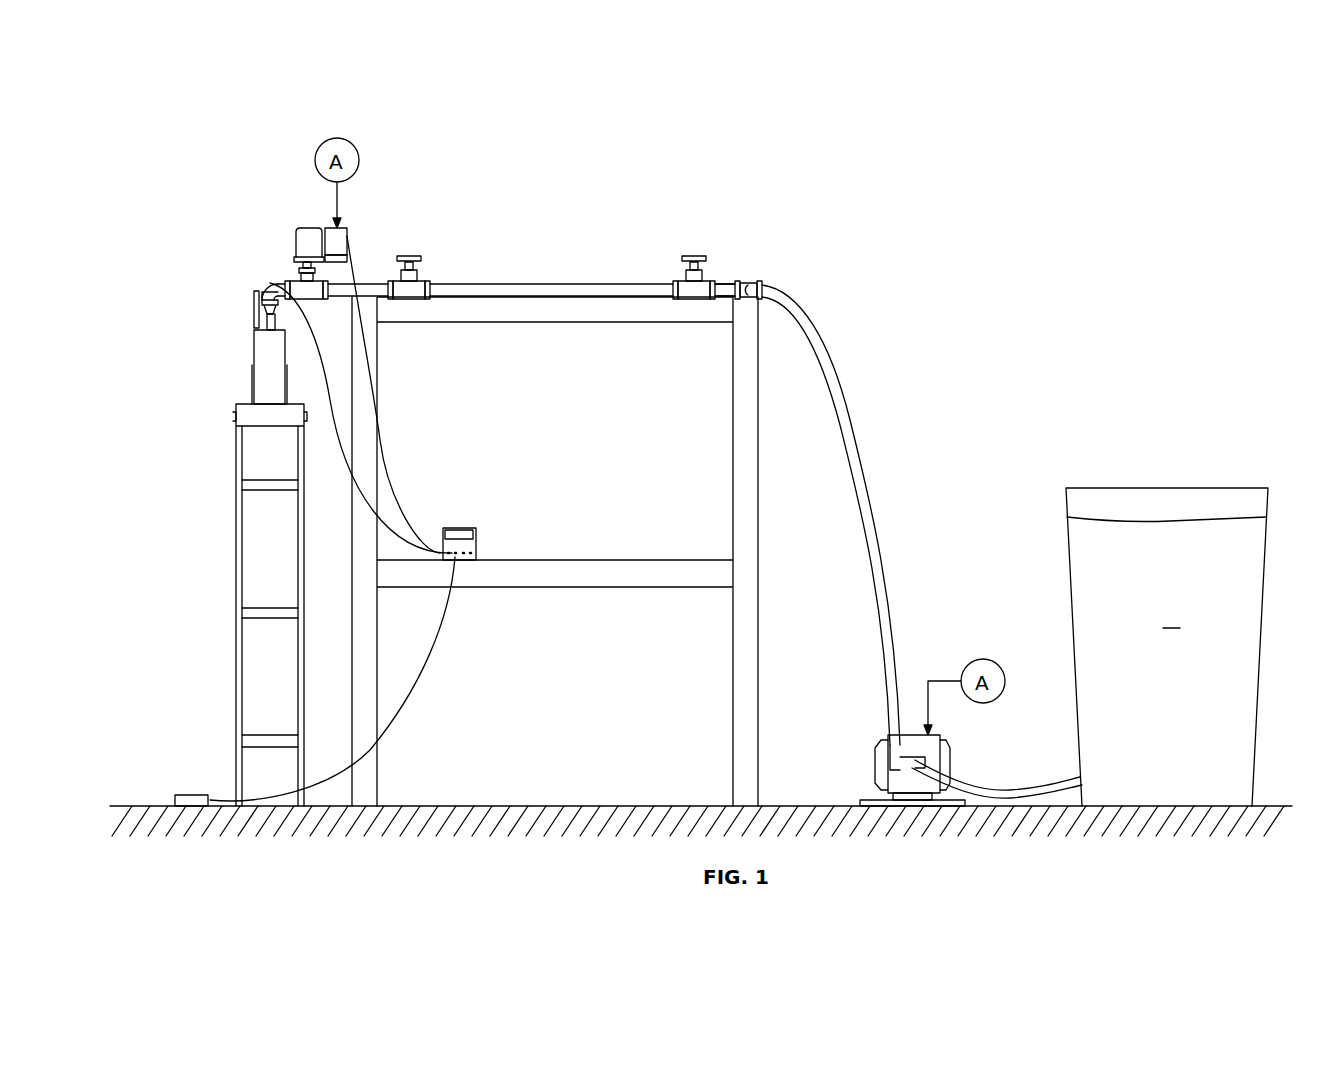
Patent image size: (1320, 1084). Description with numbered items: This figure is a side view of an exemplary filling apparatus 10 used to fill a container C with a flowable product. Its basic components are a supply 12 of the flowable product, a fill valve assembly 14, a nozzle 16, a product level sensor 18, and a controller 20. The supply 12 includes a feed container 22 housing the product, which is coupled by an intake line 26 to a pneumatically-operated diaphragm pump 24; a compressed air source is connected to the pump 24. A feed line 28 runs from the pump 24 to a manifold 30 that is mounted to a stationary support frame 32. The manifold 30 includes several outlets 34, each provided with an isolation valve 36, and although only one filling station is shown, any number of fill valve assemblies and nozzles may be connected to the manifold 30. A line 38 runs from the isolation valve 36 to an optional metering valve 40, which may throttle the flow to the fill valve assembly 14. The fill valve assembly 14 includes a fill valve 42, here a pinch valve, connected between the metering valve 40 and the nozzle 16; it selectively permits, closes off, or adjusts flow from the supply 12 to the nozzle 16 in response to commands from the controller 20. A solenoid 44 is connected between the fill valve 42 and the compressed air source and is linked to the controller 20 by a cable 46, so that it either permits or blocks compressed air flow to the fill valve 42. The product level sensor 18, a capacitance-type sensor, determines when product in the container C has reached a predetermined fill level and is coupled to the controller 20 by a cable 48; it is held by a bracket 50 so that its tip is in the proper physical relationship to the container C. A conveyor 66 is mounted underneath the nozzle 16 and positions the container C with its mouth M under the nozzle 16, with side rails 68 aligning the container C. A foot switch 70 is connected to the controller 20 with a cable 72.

The filling apparatus 10 is at (928, 188).
The supply 12 is at (1059, 471).
The fill valve assembly 14 is at (243, 208).
The nozzle 16 is at (278, 305).
The product level sensor 18 is at (254, 313).
The controller 20 is at (476, 540).
The feed container 22 is at (1255, 686).
The diaphragm pump 24 is at (942, 746).
The intake line 26 is at (1000, 786).
The feed line 28 is at (866, 498).
The manifold 30 is at (750, 283).
The support frame 32 is at (758, 722).
The outlet 34 is at (730, 283).
The isolation valve 36 is at (700, 272).
The line 38 is at (525, 283).
The metering valve 40 is at (420, 282).
The fill valve 42 is at (297, 232).
The solenoid 44 is at (347, 236).
The cable 46 is at (412, 512).
The cable 48 is at (352, 504).
The bracket 50 is at (262, 300).
The conveyor 66 is at (236, 474).
The side rails 68 is at (252, 382).
The foot switch 70 is at (192, 796).
The cable 72 is at (415, 700).
The container C is at (256, 348).
The mouth M is at (275, 322).